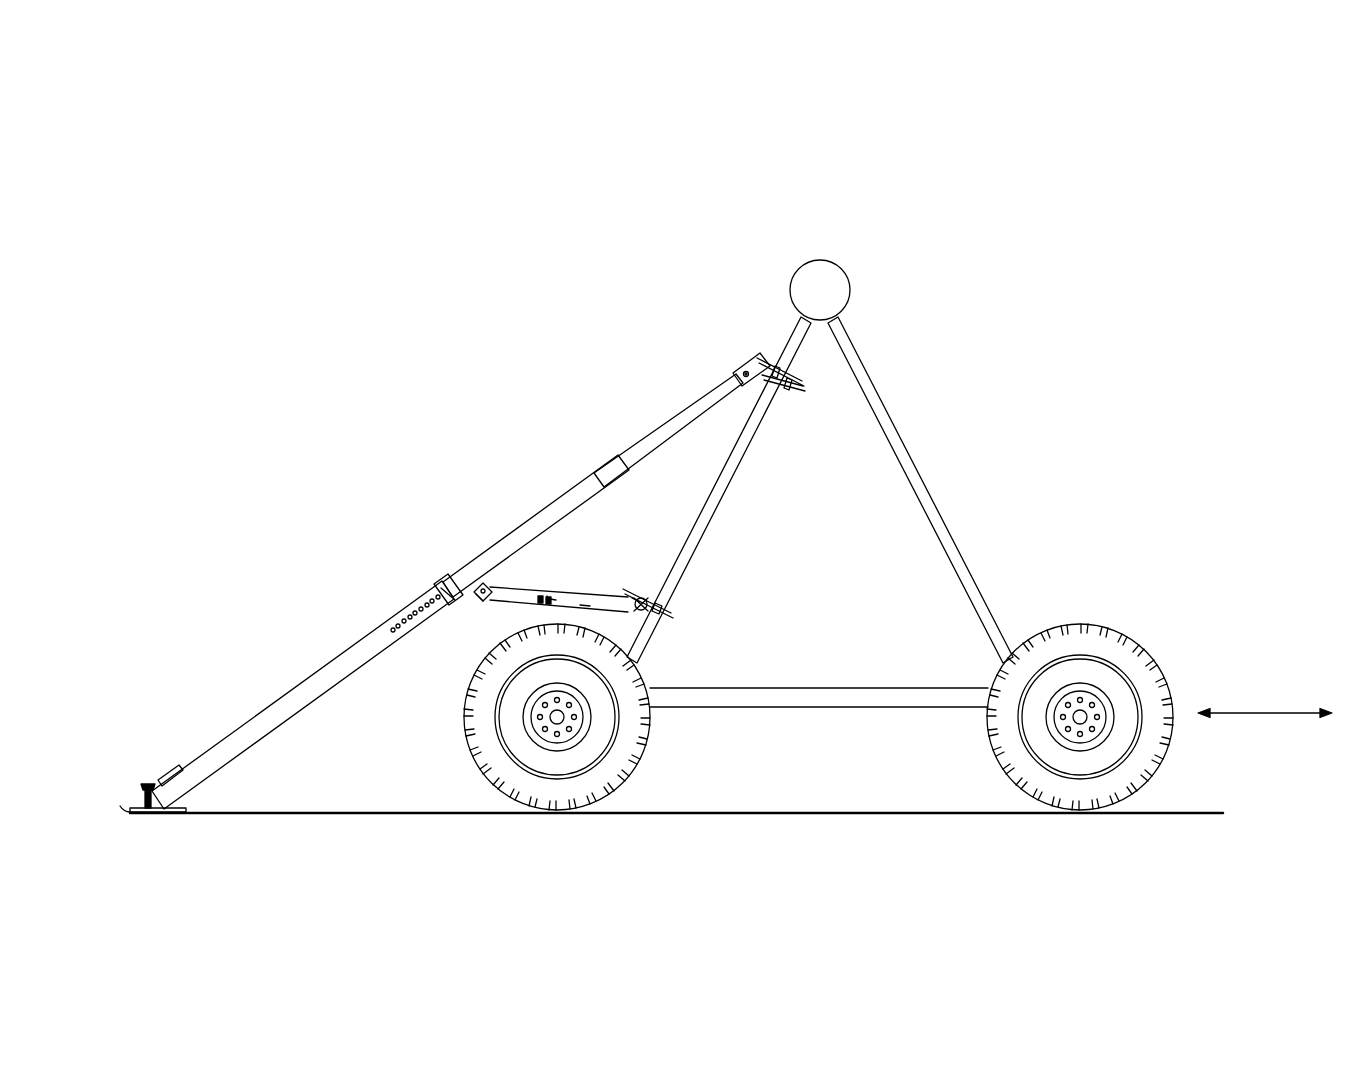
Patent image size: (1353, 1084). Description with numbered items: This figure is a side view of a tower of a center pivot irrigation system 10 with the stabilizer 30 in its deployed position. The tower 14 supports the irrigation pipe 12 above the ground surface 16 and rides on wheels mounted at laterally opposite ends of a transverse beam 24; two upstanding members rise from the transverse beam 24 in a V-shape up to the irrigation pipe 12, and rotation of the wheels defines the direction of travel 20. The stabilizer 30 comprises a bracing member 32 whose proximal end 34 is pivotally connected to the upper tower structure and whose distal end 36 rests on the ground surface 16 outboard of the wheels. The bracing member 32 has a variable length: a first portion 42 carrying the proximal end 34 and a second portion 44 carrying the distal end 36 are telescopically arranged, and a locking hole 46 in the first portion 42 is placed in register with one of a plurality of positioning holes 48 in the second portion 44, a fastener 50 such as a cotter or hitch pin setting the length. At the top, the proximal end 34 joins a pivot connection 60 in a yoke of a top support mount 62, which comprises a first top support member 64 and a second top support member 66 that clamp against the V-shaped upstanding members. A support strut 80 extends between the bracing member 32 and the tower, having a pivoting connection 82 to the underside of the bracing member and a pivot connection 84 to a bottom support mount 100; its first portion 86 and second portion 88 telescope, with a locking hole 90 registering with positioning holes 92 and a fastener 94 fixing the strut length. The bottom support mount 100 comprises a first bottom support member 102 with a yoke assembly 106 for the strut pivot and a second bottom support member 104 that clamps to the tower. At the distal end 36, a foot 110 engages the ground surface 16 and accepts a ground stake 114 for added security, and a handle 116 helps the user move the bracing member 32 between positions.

The center pivot irrigation system 10 is at (872, 160).
The irrigation pipe 12 is at (838, 268).
The tower 14 is at (820, 490).
The ground surface 16 is at (758, 839).
The direction of travel 20 is at (1277, 715).
The transverse beam 24 is at (788, 688).
The stabilizer 30 is at (552, 453).
The bracing member 32 is at (631, 442).
The proximal end 34 is at (741, 362).
The distal end 36 is at (160, 806).
The first portion 42 is at (542, 522).
The second portion 44 is at (346, 678).
The locking hole 46 is at (461, 600).
The positioning holes 48 is at (398, 632).
The fastener 50 is at (447, 578).
The pivot connection 60 is at (745, 362).
The top support mount 62 is at (746, 312).
The first top support member 64 is at (765, 356).
The second top support member 66 is at (798, 368).
The support strut 80 is at (579, 593).
The pivoting connection 82 is at (486, 586).
The pivot connection 84 is at (634, 601).
The first portion 86 is at (492, 602).
The second portion 88 is at (582, 608).
The locking hole 90 is at (552, 604).
The positioning holes 92 is at (538, 600).
The fastener 94 is at (548, 596).
The bottom support mount 100 is at (641, 578).
The first bottom support member 102 is at (634, 598).
The second bottom support member 104 is at (668, 606).
The yoke assembly 106 is at (660, 588).
The foot 110 is at (136, 801).
The ground stake 114 is at (149, 782).
The handle 116 is at (181, 772).